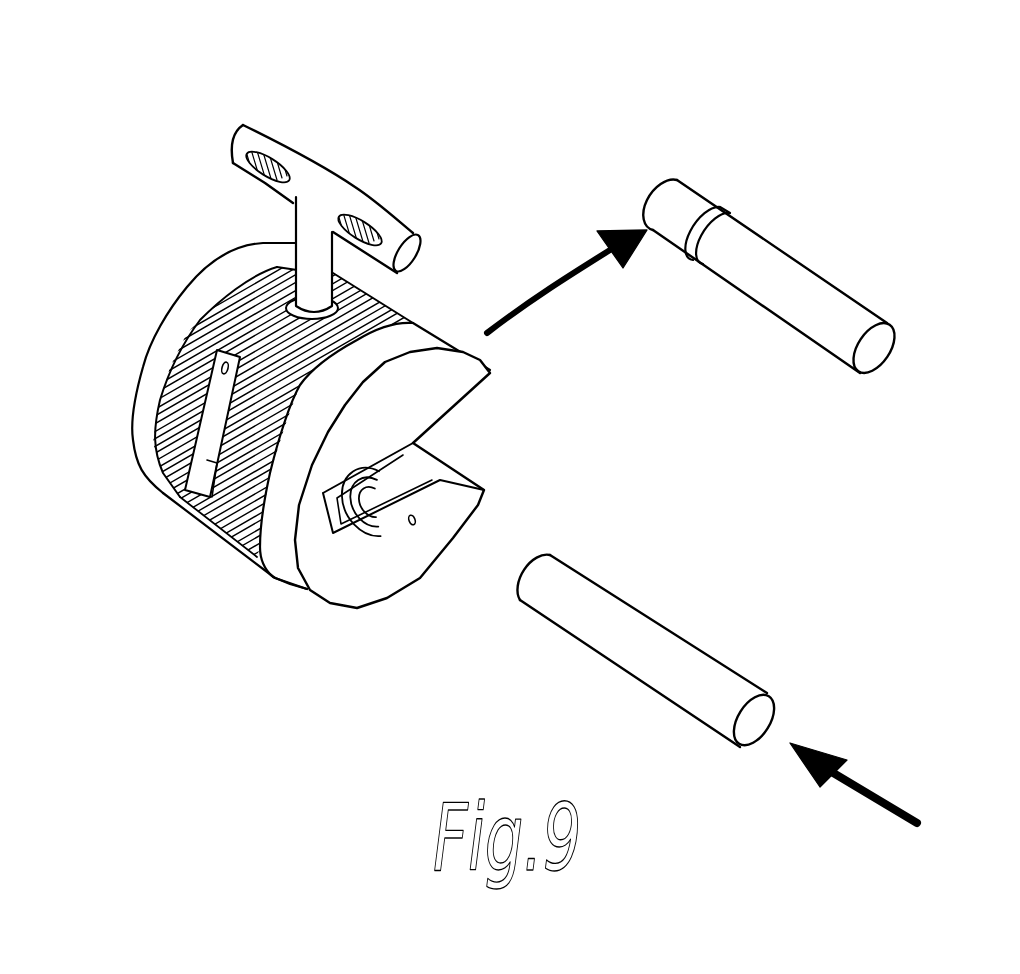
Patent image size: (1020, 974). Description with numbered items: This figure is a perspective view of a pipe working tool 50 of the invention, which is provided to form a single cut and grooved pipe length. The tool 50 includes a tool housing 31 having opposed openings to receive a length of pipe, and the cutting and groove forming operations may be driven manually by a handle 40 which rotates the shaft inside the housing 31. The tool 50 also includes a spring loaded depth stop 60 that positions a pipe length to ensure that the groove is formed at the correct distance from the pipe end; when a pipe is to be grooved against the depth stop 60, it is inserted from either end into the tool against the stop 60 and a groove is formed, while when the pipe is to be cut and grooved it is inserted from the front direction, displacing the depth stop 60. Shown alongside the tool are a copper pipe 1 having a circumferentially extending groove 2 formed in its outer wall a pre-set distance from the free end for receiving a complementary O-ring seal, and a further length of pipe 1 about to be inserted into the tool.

The pipe working tool 50 is at (266, 360).
The handle 40 is at (373, 115).
The spring loaded depth stop 60 is at (130, 590).
The tool housing 31 is at (312, 660).
The copper pipe 1 is at (597, 737).
The circumferentially extending groove 2 is at (757, 157).